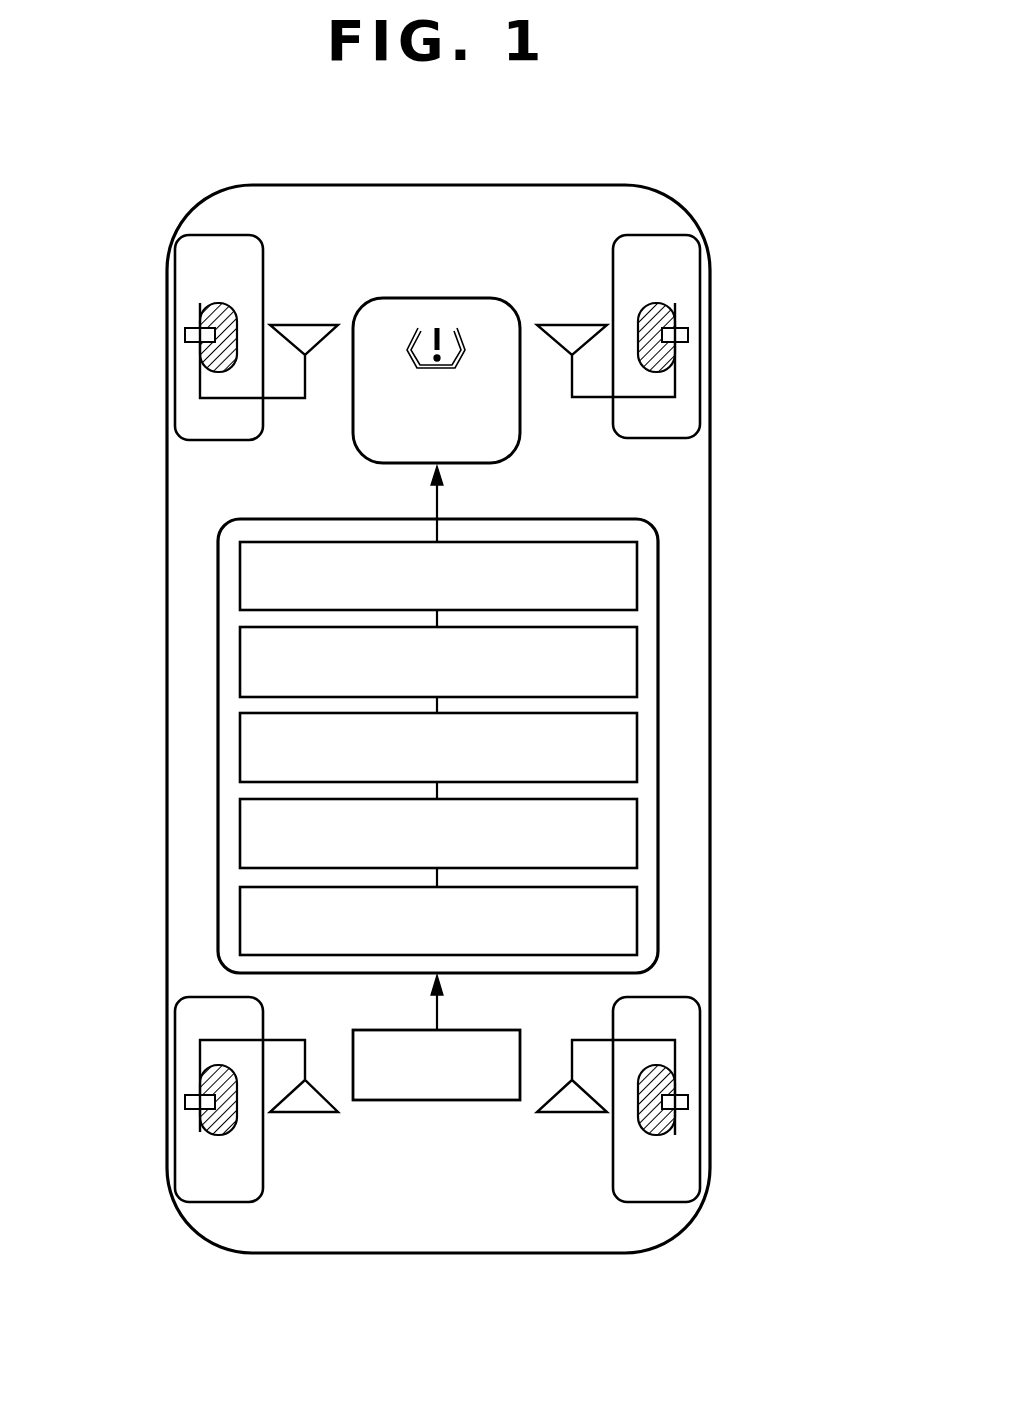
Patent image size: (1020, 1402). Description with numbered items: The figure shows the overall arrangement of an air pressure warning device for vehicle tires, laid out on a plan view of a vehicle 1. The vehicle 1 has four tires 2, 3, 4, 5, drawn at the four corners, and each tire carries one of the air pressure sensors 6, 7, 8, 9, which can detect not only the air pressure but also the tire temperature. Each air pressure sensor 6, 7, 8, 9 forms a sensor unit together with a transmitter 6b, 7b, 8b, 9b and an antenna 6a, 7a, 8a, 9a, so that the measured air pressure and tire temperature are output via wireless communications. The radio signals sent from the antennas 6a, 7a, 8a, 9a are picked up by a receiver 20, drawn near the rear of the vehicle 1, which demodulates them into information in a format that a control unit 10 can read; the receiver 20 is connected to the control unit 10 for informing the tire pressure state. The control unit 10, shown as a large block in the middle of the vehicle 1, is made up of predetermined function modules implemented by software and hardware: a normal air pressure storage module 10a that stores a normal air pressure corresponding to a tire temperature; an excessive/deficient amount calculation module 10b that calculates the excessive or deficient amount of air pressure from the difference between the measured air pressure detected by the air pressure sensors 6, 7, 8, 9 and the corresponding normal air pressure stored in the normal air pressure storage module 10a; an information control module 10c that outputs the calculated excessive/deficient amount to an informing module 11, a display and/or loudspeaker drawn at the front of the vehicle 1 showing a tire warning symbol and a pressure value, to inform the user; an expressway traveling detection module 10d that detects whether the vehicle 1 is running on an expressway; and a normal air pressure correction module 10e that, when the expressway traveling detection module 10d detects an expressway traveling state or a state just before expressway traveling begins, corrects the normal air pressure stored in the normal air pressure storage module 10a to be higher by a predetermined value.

The vehicle 1 is at (688, 160).
The tire 2 is at (683, 412).
The tire 3 is at (193, 416).
The tire 4 is at (683, 1016).
The tire 5 is at (192, 1020).
The air pressure sensor 6 is at (663, 306).
The antenna 6a is at (560, 325).
The transmitter 6b is at (685, 342).
The air pressure sensor 7 is at (213, 306).
The antenna 7a is at (312, 325).
The transmitter 7b is at (190, 335).
The air pressure sensor 8 is at (663, 1130).
The antenna 8a is at (559, 1106).
The transmitter 8b is at (685, 1093).
The air pressure sensor 9 is at (212, 1135).
The antenna 9a is at (318, 1106).
The transmitter 9b is at (190, 1100).
The control unit 10 is at (547, 519).
The normal air pressure storage module 10a is at (638, 742).
The excessive/deficient amount calculation module 10b is at (638, 830).
The information control module 10c is at (638, 917).
The expressway traveling detection module 10d is at (638, 572).
The normal air pressure correction module 10e is at (638, 657).
The informing module 11 is at (444, 297).
The receiver 20 is at (437, 1104).